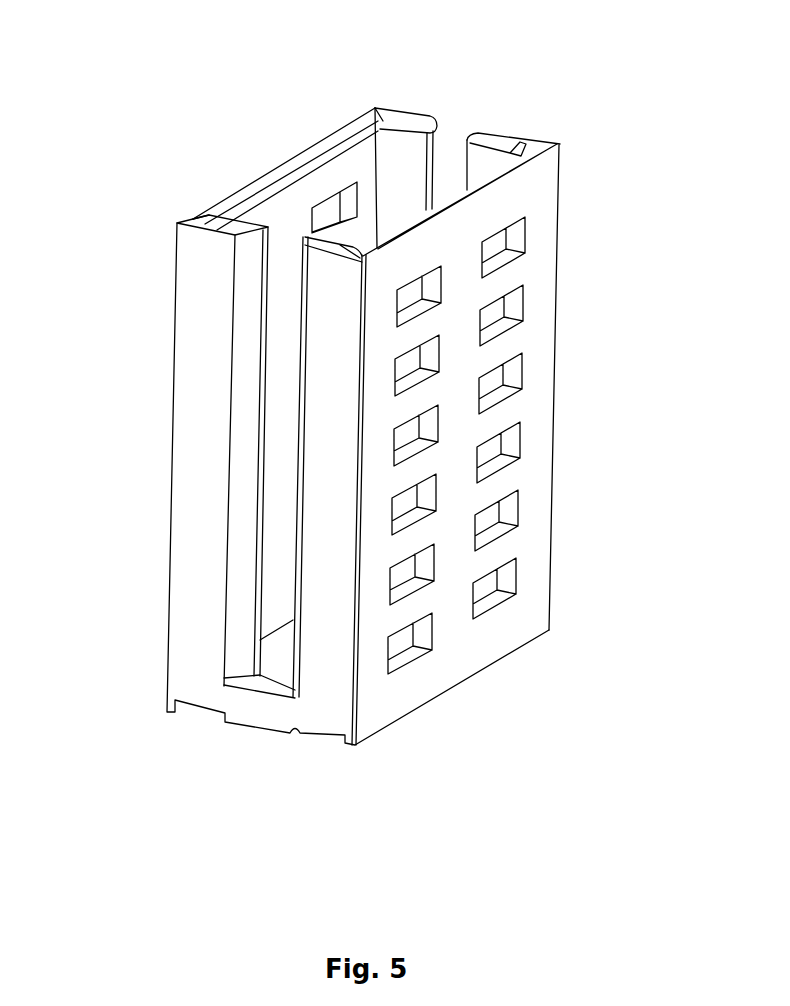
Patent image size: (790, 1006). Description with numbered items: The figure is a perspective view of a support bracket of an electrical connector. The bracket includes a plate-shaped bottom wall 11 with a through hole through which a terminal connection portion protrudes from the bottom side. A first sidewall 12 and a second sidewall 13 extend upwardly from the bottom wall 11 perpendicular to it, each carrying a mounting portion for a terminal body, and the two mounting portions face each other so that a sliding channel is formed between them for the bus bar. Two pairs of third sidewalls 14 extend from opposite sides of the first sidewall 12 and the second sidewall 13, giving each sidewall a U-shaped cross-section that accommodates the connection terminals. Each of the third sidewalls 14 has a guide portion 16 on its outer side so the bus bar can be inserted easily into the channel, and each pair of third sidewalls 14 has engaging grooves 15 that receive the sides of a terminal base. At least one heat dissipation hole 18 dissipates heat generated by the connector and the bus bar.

The bottom wall 11 is at (257, 713).
The first sidewall 12 is at (275, 163).
The second sidewall 13 is at (528, 340).
The third sidewalls 14 is at (200, 325).
The engaging grooves 15 is at (210, 221).
The guide portion 16 is at (440, 128).
The heat dissipation hole 18 is at (498, 515).